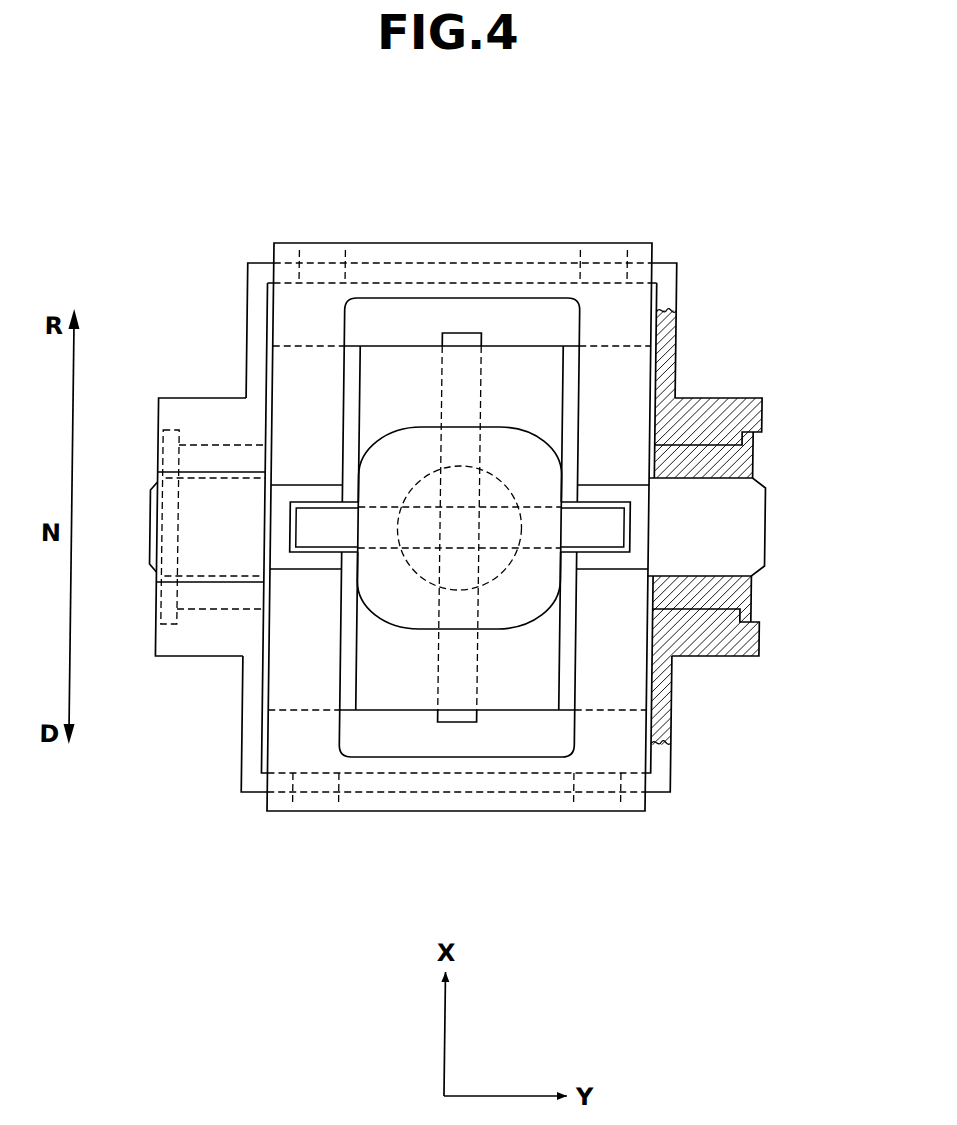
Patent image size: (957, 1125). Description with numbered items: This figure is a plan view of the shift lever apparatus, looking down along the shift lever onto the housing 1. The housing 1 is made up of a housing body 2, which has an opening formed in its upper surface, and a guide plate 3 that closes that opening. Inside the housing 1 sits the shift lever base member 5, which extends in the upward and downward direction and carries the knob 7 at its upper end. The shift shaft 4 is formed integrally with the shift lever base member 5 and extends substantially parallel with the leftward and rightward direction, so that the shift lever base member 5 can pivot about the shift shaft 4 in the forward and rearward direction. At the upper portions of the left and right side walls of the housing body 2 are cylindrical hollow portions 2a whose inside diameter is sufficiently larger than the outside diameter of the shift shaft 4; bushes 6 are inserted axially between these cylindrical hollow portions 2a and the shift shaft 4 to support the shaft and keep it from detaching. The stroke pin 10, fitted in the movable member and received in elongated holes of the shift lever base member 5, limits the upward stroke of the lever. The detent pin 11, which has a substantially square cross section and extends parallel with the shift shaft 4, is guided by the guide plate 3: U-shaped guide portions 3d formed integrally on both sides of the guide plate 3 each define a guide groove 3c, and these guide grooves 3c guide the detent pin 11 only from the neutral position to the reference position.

The housing 1 is at (826, 237).
The housing body 2 is at (668, 372).
The cylindrical hollow portion 2a is at (157, 416).
The guide plate 3 is at (648, 246).
The guide groove 3c is at (316, 516).
The guide portion 3d is at (278, 518).
The shift shaft 4 is at (740, 530).
The shift lever base member 5 is at (303, 380).
The bush 6 is at (212, 445).
The knob 7 is at (414, 613).
The stroke pin 10 is at (455, 717).
The detent pin 11 is at (334, 537).